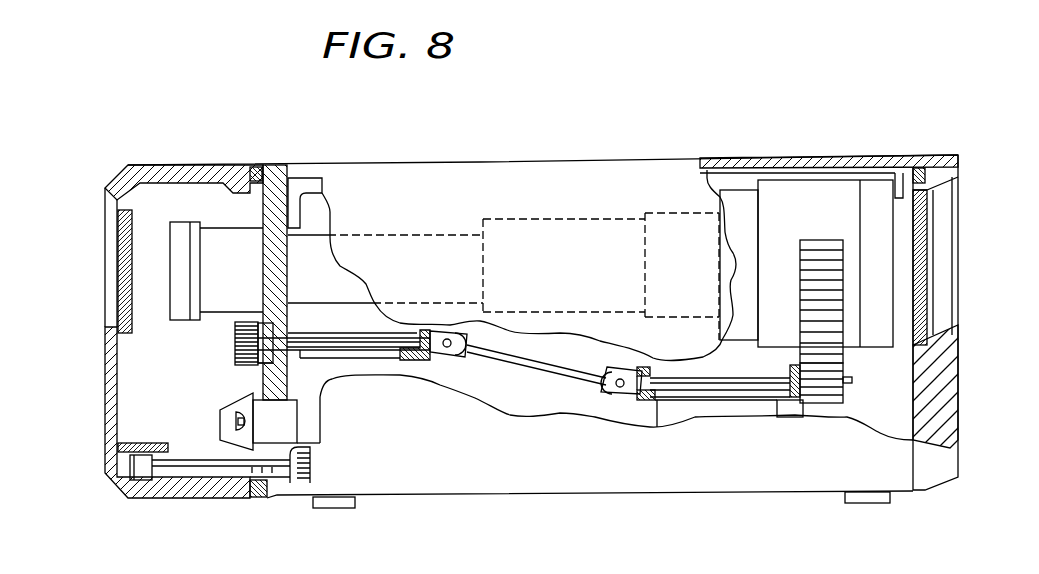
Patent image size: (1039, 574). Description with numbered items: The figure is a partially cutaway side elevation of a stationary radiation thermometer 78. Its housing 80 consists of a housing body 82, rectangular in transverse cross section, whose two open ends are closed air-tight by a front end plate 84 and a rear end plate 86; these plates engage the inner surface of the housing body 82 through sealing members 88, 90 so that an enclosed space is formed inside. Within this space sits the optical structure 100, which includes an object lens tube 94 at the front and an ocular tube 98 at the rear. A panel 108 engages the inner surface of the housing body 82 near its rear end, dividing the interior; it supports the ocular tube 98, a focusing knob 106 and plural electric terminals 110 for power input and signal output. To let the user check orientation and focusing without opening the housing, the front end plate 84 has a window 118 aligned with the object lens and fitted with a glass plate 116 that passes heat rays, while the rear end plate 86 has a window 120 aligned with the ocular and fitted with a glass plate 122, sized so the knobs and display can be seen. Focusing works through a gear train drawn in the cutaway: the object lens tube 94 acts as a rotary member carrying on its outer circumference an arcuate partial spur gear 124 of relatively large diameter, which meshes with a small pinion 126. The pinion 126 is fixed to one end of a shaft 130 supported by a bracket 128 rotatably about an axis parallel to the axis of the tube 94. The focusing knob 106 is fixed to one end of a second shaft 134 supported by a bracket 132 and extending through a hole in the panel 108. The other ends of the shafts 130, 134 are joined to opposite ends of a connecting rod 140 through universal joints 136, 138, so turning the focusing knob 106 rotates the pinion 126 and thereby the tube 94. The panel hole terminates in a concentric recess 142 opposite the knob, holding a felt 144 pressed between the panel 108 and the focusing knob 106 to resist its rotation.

The radiation thermometer 78 is at (685, 97).
The housing 80 is at (904, 147).
The housing body 82 is at (478, 168).
The front end plate 84 is at (952, 410).
The rear end plate 86 is at (122, 180).
The sealing member 88 is at (955, 175).
The sealing member 90 is at (258, 178).
The object lens tube 94 is at (823, 185).
The ocular tube 98 is at (208, 238).
The optical structure 100 is at (604, 203).
The focusing knob 106 is at (235, 348).
The panel 108 is at (276, 178).
The electric terminals 110 is at (226, 412).
The glass plate 116 is at (918, 268).
The window 118 is at (932, 335).
The window 120 is at (106, 327).
The glass plate 122 is at (118, 278).
The arcuate partial spur gear 124 is at (818, 245).
The pinion 126 is at (843, 395).
The bracket 128 is at (735, 405).
The shaft 130 is at (680, 382).
The bracket 132 is at (351, 358).
The shaft 134 is at (387, 340).
The universal joint 136 is at (447, 370).
The universal joint 138 is at (617, 408).
The connecting rod 140 is at (517, 360).
The recess 142 is at (270, 323).
The felt 144 is at (270, 365).